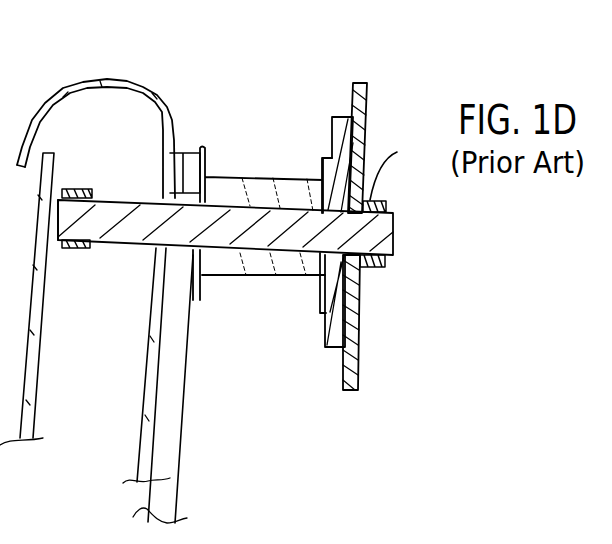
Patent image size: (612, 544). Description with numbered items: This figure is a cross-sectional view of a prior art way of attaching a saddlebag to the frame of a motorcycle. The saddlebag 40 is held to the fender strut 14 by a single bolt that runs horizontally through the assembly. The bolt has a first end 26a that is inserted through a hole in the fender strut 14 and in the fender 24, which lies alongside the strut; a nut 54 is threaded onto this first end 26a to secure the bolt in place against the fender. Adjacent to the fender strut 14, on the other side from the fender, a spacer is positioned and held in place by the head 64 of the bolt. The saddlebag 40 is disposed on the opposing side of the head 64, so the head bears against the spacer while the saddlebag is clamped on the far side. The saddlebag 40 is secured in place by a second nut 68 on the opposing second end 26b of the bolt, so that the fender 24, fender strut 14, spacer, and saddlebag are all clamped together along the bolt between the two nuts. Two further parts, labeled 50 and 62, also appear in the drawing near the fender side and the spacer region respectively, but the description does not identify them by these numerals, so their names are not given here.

The fender strut 14 is at (342, 116).
The fender 24 is at (360, 82).
The first end of bolt 26a is at (393, 229).
The second end of bolt 26b is at (60, 185).
The saddlebag 40 is at (134, 80).
The washer 50 is at (395, 162).
The nut 54 is at (383, 200).
The cylinder 62 is at (241, 177).
The head of bolt 64 is at (184, 153).
The nut 68 is at (91, 190).